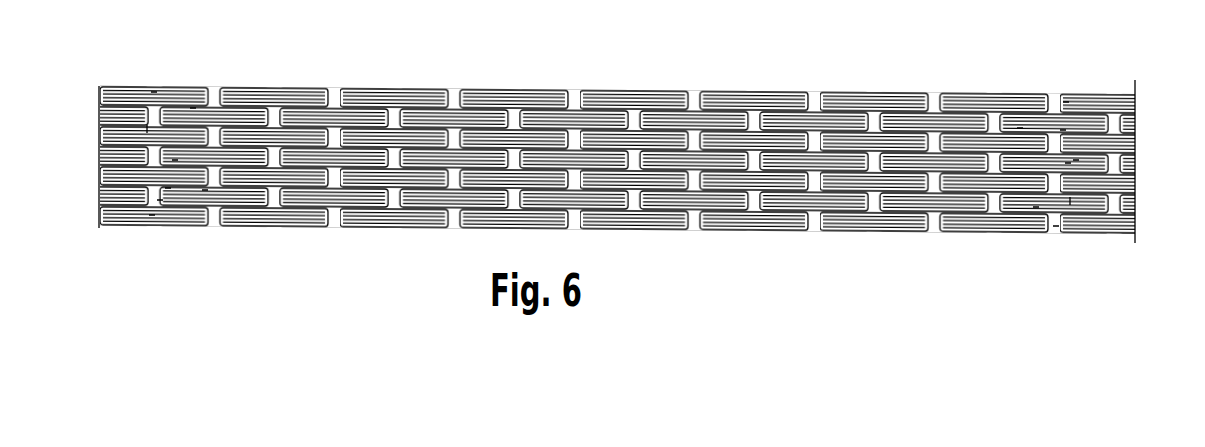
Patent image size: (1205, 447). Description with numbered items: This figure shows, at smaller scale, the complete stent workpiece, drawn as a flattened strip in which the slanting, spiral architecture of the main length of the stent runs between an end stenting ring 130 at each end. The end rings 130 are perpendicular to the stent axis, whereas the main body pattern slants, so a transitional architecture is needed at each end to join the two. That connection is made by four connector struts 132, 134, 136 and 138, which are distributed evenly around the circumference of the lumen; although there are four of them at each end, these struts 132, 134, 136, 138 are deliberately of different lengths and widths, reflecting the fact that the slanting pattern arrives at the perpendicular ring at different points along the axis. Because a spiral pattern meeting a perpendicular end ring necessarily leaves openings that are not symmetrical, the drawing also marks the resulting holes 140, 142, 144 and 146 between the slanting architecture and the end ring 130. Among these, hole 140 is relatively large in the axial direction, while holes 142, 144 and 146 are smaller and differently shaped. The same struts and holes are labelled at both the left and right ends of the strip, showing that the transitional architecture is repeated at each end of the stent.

The end stenting ring 130 is at (130, 232).
The connector strut 132 is at (157, 200).
The connector strut 134 is at (165, 188).
The connector strut 136 is at (147, 126).
The connector strut 138 is at (151, 92).
The hole 140 is at (202, 190).
The hole 142 is at (172, 160).
The hole 144 is at (190, 108).
The hole 146 is at (149, 215).